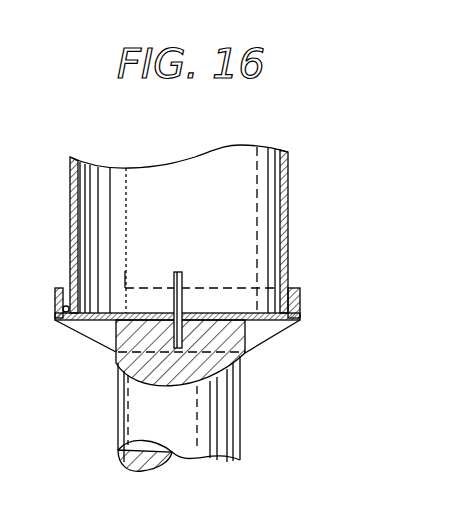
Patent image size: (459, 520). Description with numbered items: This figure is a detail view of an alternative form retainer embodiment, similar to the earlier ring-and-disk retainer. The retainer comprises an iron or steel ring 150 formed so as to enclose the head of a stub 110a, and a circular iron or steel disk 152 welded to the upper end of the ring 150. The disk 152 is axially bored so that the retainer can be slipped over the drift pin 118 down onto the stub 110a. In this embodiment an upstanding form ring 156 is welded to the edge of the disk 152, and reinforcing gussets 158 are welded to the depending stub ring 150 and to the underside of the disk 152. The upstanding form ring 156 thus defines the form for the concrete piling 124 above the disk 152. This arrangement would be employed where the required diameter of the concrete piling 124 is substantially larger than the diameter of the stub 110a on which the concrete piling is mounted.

The outer tube 124 is at (288, 193).
The drift pin 118 is at (183, 278).
The upstanding form ring 156 is at (292, 304).
The disk 152 is at (265, 330).
The gusset web 158 is at (97, 330).
The ring 150 is at (253, 346).
The stub 110a is at (225, 442).